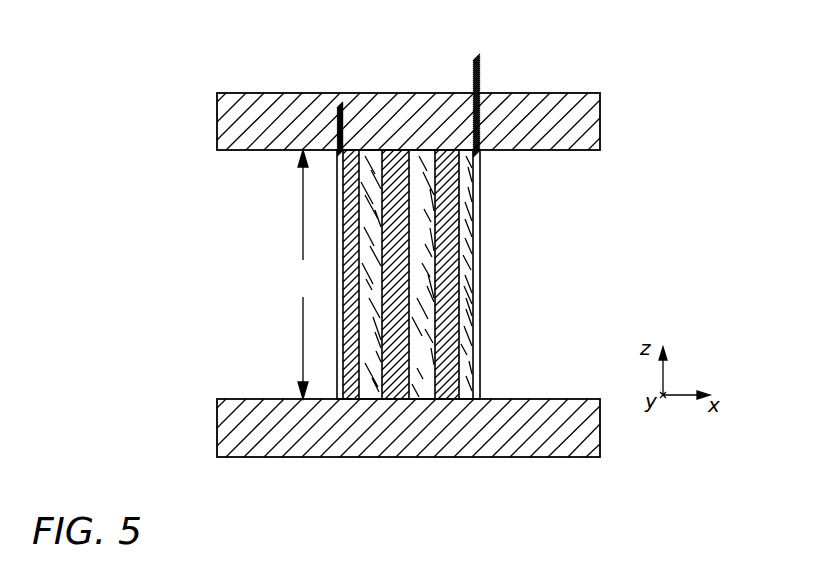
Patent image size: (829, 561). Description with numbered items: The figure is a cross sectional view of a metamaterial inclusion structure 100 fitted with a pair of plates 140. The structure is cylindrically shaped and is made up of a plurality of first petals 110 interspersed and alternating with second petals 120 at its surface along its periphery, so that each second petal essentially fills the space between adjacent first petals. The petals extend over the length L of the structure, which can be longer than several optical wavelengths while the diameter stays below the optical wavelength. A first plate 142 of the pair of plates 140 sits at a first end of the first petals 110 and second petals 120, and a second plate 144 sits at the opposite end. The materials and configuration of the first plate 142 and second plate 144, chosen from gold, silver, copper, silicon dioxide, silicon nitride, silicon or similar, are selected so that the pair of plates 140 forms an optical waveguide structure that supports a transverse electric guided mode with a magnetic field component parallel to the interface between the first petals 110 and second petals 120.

The metamaterial inclusion structure 100 is at (411, 237).
The first petals 110 is at (480, 190).
The second petals 120 is at (463, 232).
The pair of plates 140 is at (185, 243).
The first plate 142 is at (217, 425).
The second plate 144 is at (217, 120).